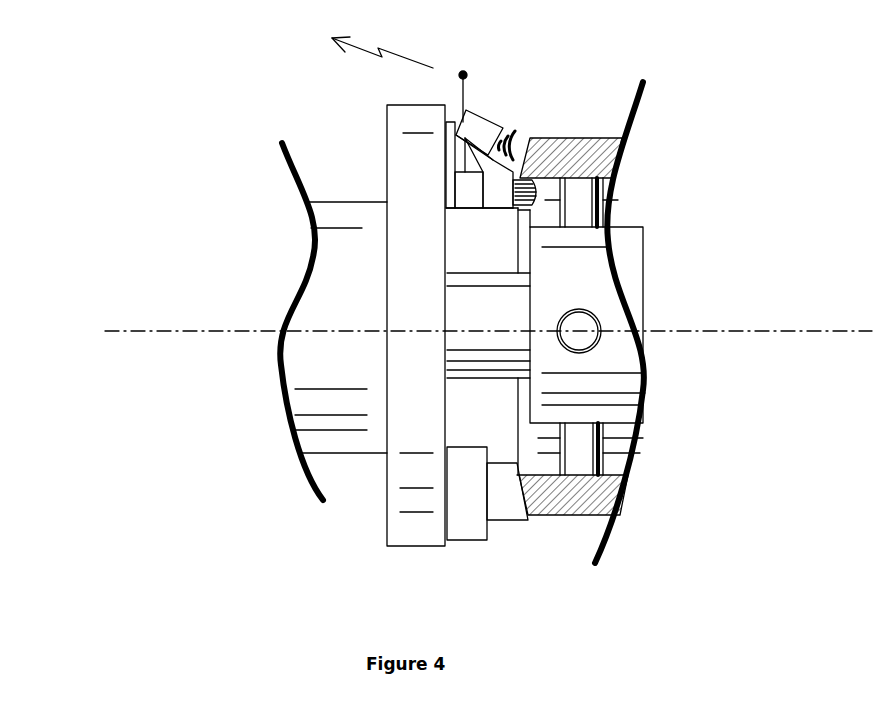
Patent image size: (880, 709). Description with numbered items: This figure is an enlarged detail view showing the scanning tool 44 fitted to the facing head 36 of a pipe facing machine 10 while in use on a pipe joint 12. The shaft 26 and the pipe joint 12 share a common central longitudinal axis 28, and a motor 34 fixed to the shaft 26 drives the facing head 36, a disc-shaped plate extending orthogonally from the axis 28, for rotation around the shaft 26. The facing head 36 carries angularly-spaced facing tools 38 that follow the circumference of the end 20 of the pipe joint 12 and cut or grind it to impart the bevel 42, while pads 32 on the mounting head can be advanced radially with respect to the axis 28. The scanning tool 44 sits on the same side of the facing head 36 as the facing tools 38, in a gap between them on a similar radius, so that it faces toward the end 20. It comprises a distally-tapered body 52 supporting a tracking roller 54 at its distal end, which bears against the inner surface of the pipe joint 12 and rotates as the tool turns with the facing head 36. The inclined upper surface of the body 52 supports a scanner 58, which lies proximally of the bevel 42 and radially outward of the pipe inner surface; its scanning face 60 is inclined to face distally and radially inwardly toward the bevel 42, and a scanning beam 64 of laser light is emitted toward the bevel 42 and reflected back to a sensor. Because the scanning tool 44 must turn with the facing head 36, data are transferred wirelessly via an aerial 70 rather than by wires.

The pipe facing machine 10 is at (300, 551).
The pipe joint 12 is at (609, 98).
The pipe end 20 is at (585, 492).
The shaft 26 is at (473, 343).
The central longitudinal axis 28 is at (180, 333).
The pads 32 is at (590, 320).
The motor 34 is at (355, 210).
The facing head 36 is at (410, 262).
The facing tools 38 is at (505, 505).
The bevel 42 is at (525, 170).
The scanning tool 44 is at (486, 90).
The body 52 is at (493, 200).
The tracking roller 54 is at (522, 193).
The scanner 58 is at (477, 132).
The scanning face 60 is at (500, 124).
The scanning beam 64 is at (490, 160).
The aerials 70 is at (462, 97).